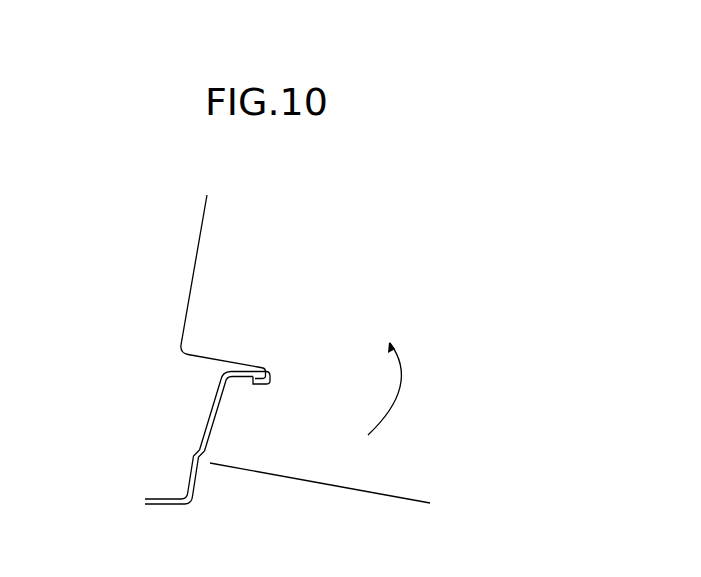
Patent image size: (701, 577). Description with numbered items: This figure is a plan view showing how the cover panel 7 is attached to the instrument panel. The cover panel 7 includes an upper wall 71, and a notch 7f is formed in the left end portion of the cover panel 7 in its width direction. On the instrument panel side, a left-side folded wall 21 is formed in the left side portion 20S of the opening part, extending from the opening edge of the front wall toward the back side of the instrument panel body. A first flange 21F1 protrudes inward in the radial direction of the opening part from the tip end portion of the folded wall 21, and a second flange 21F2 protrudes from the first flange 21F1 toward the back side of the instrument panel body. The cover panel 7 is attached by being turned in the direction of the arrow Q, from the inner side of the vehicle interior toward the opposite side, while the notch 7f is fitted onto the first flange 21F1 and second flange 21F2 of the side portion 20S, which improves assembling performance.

The cover panel 7 is at (184, 288).
The upper wall 71 is at (223, 297).
The notch 7f is at (214, 366).
The left-side folded wall 21 is at (287, 440).
The first flange 21F1 is at (238, 385).
The second flange 21F2 is at (266, 381).
The left side portion 20S is at (229, 436).
The arrow Q is at (399, 388).